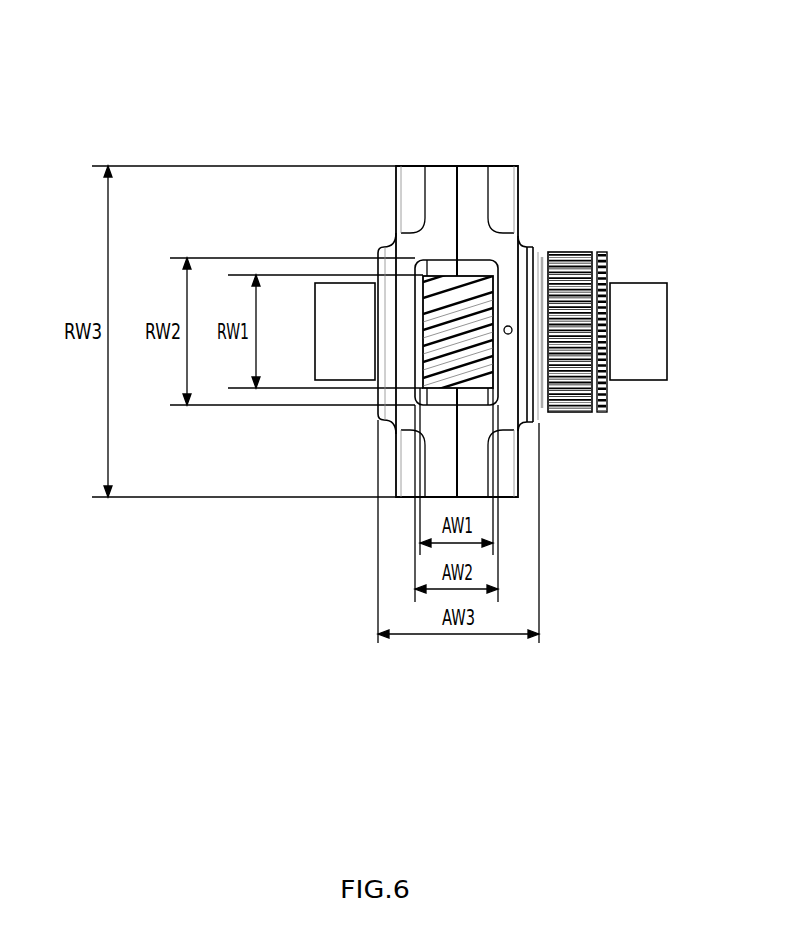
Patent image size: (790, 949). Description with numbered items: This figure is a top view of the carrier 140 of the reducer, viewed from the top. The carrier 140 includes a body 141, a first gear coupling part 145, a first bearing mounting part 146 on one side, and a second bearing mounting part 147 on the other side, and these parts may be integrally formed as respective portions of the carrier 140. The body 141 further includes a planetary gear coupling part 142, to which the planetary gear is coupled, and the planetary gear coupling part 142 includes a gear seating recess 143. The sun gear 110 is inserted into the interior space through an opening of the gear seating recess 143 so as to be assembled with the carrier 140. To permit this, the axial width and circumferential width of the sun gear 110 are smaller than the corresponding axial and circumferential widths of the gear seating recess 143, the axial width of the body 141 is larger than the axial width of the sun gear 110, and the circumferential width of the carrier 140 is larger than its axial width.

The carrier 140 is at (497, 84).
The body 141 is at (474, 180).
The planetary gear coupling part 142 is at (608, 199).
The gear seating recess 143 is at (483, 263).
The sun gear 110 is at (480, 305).
The first gear coupling part 145 is at (573, 393).
The first bearing mounting part 146 is at (347, 298).
The second bearing mounting part 147 is at (640, 365).